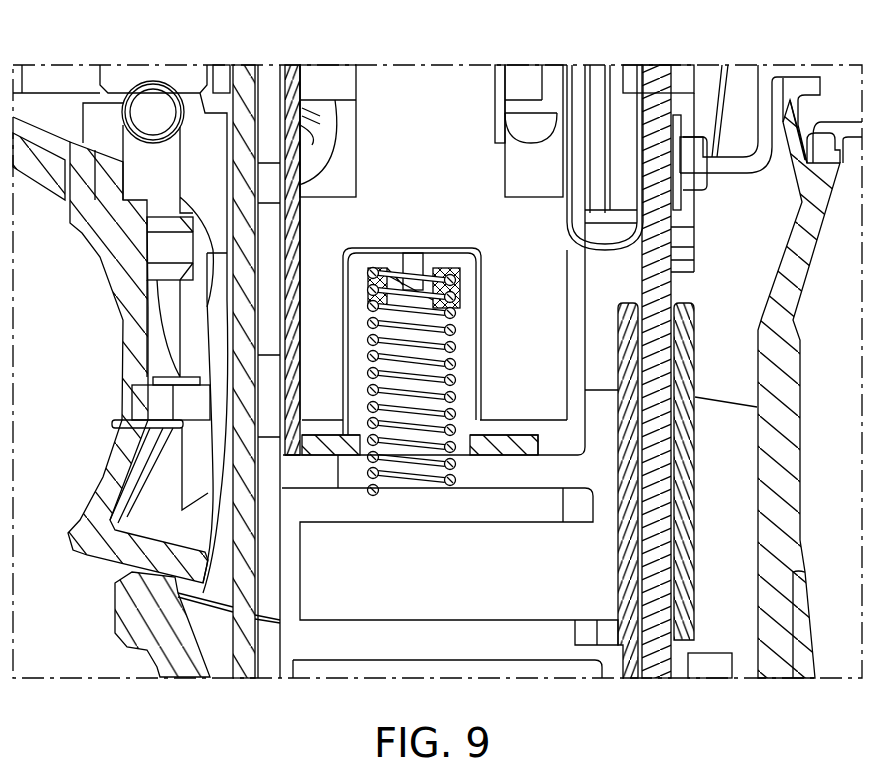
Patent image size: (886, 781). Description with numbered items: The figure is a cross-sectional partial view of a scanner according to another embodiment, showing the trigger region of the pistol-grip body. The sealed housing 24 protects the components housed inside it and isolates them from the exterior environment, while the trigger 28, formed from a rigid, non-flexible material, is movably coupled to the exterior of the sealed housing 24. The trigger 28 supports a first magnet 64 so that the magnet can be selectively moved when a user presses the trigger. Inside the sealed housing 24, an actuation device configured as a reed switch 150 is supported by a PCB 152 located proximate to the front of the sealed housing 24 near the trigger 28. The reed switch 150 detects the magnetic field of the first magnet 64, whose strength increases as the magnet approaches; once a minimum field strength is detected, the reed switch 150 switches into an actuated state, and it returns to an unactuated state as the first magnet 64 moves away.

The sealed housing 24 is at (797, 480).
The trigger 28 is at (97, 503).
The first magnet 64 is at (173, 420).
The reed switch 150 is at (265, 427).
The PCB 152 is at (338, 100).